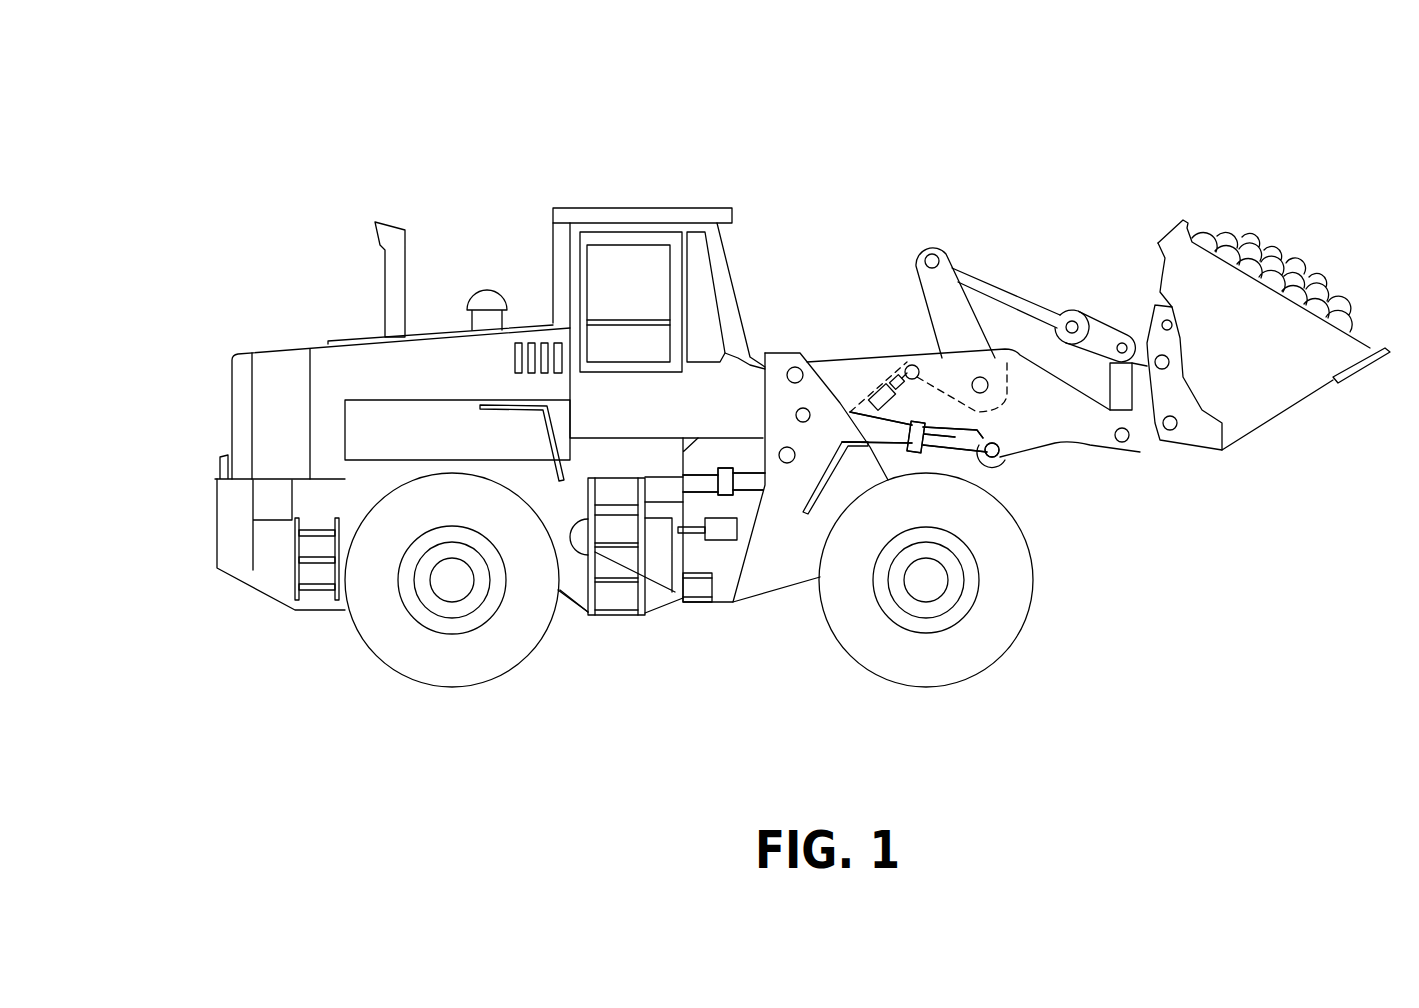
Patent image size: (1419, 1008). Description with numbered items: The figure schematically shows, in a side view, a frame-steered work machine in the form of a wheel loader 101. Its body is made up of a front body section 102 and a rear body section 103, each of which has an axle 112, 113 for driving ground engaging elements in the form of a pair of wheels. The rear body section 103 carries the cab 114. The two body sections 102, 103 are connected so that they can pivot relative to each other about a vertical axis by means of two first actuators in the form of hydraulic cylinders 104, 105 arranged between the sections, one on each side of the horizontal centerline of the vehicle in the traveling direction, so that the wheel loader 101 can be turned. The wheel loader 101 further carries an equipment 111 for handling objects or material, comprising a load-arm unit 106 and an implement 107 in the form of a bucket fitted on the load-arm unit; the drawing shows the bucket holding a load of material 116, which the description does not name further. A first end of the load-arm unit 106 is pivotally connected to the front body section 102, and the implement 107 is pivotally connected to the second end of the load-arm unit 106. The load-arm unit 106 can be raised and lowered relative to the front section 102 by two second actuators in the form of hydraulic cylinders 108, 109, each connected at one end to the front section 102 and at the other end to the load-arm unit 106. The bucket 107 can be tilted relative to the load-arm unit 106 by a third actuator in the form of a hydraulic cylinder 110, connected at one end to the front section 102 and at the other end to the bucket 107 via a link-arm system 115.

The wheel loader 101 is at (501, 129).
The front body section 102 is at (748, 573).
The rear body section 103 is at (273, 568).
The hydraulic cylinder 104 is at (750, 483).
The hydraulic cylinder 105 is at (750, 483).
The load-arm unit 106 is at (1150, 447).
The implement 107 is at (1250, 390).
The hydraulic cylinder 108 is at (955, 447).
The hydraulic cylinder 109 is at (955, 447).
The hydraulic cylinder 110 is at (888, 380).
The equipment 111 is at (1083, 188).
The axle 112 is at (445, 583).
The axle 113 is at (932, 581).
The cab 114 is at (638, 215).
The link-arm system 115 is at (1000, 293).
The load 116 is at (1275, 280).